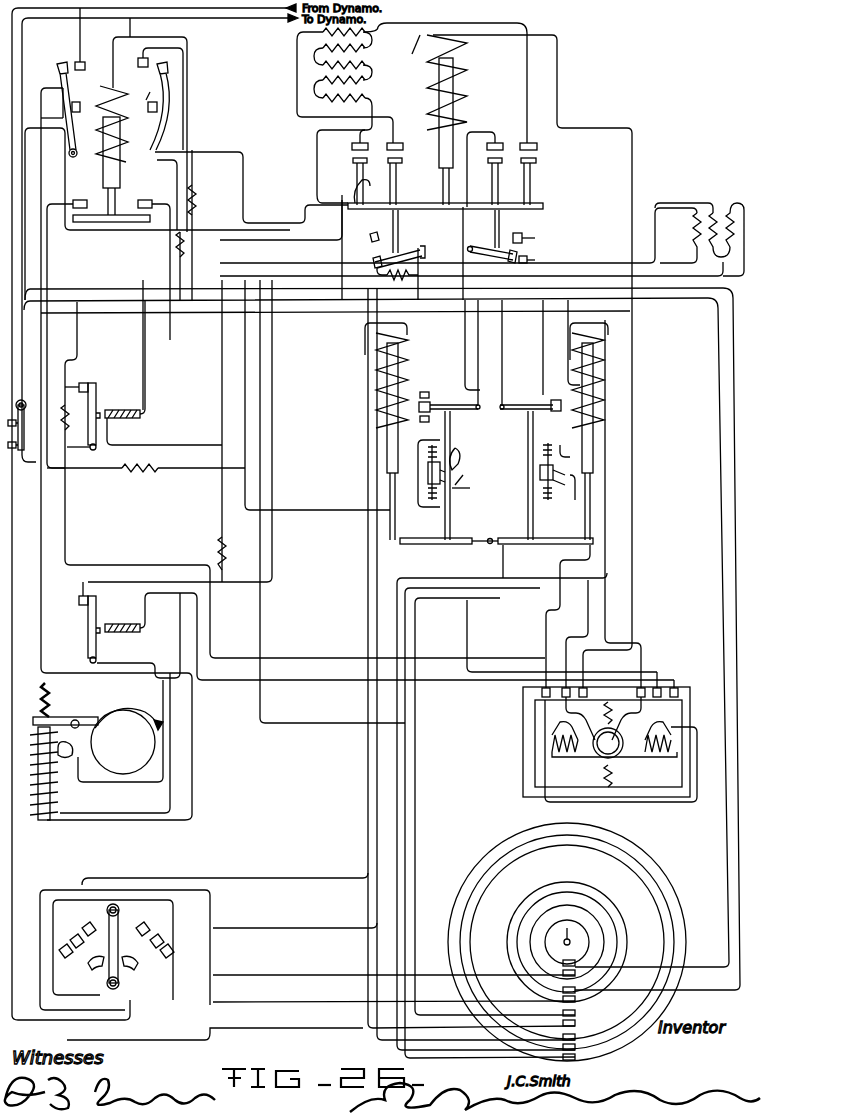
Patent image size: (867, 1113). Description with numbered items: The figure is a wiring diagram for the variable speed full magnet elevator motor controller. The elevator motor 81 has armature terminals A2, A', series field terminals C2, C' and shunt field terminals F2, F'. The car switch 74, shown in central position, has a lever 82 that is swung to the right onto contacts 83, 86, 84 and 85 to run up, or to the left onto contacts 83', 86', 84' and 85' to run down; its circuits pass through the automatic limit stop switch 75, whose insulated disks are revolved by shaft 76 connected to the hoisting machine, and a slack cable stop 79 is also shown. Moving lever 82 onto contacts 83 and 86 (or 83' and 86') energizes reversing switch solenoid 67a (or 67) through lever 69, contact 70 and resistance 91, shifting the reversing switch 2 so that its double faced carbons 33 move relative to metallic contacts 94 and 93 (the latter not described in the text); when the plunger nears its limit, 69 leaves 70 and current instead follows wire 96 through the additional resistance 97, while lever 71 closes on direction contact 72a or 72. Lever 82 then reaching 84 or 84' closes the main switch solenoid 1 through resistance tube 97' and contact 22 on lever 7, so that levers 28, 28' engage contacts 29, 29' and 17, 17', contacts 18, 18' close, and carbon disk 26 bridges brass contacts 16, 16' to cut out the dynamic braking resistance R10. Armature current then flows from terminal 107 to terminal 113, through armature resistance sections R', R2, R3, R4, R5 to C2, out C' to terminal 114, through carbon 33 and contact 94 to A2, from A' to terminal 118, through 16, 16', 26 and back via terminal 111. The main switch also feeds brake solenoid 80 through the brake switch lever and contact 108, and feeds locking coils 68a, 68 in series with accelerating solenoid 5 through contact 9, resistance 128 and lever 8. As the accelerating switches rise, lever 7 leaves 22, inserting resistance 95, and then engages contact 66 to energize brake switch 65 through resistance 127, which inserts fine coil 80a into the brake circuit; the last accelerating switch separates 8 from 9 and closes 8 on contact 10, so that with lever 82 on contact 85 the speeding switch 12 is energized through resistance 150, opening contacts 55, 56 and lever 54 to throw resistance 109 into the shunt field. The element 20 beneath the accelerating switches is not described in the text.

The main switch solenoid 1 is at (108, 142).
The reversing switch 2 is at (496, 475).
The accelerating solenoid 5 is at (465, 82).
The lever 7 is at (401, 260).
The lever 8 is at (493, 262).
The contact 9 is at (530, 250).
The contact 10 is at (530, 234).
The speeding switch 12 is at (120, 410).
The brass contact of main switch 16 is at (78, 190).
The brass contact of main switch 16' is at (155, 186).
The main switch contact 17 is at (40, 93).
The main switch contact 17' is at (140, 92).
The main switch contact 18 is at (49, 98).
The main switch contact 18' is at (181, 107).
The cross bar 20 is at (435, 203).
The contact 22 is at (373, 262).
The carbon disk 26 is at (140, 222).
The main switch lever 28 is at (51, 100).
The main switch lever 28' is at (183, 106).
The main switch contact 29 is at (64, 51).
The main switch contact 29' is at (132, 71).
The double faced carbons 33 is at (452, 486).
The speeding switch lever 54 is at (97, 449).
The speeding switch contact 55 is at (96, 390).
The speeding switch contact 56 is at (84, 383).
The brake switch 65 is at (122, 624).
The contact 66 is at (379, 237).
The reversing switch solenoid 67 is at (387, 410).
The reversing switch solenoid 67a is at (596, 408).
The locking coil 68 is at (376, 340).
The locking coil 68a is at (604, 338).
The lever 69 is at (538, 405).
The contact 70 is at (552, 416).
The lever 71 is at (446, 405).
The direction contact 72 is at (427, 392).
The direction contact 72a is at (424, 422).
The car switch 74 is at (101, 1002).
The automatic limit stop switch 75 is at (561, 942).
The shaft 76 is at (573, 932).
The slack cable stop 79 is at (30, 450).
The brake solenoid 80 is at (50, 795).
The fine brake coil (resistance) 80a is at (72, 750).
The elevator motor 81 is at (610, 747).
The car switch lever 82 is at (118, 930).
The car switch contact 83 is at (169, 919).
The car switch contact 83' is at (74, 900).
The car switch contact 84 is at (163, 961).
The car switch contact 84' is at (51, 947).
The car switch contact 85 is at (179, 956).
The car switch contact 85' is at (46, 964).
The car switch contact 86 is at (145, 980).
The car switch contact 86' is at (67, 982).
The resistance 91 is at (713, 213).
The contact 93 is at (432, 480).
The metallic contact 94 is at (432, 472).
The resistance 95 is at (176, 250).
The wire 96 is at (502, 350).
The additional resistance 97 is at (744, 239).
The resistance tube 97' is at (206, 200).
The terminal 107 is at (69, 153).
The contact 108 is at (82, 605).
The resistance 109 is at (58, 410).
The terminal 111 is at (525, 522).
The terminal 113 is at (371, 191).
The terminal 114 is at (464, 472).
The terminal 118 is at (78, 470).
The resistance 127 is at (218, 540).
The resistance 128 is at (693, 236).
The resistance 150 is at (408, 278).
The armature resistance R' is at (323, 147).
The resistance R2 is at (323, 80).
The resistance R3 is at (323, 65).
The resistance R4 is at (323, 48).
The armature resistance R5 is at (323, 32).
The dynamic braking resistance R10 is at (148, 470).
The armature terminal A' is at (682, 678).
The armature terminal A2 is at (546, 648).
The series field terminal C' is at (663, 671).
The series field terminal C2 is at (566, 662).
The shunt field terminal F' is at (632, 662).
The shunt field terminal F2 is at (586, 660).